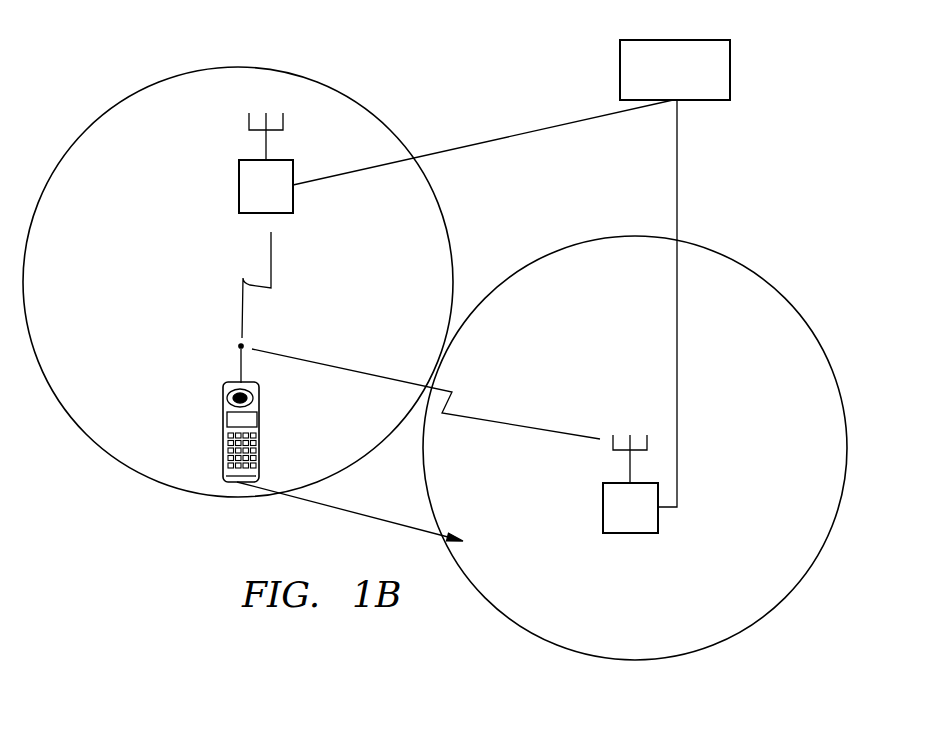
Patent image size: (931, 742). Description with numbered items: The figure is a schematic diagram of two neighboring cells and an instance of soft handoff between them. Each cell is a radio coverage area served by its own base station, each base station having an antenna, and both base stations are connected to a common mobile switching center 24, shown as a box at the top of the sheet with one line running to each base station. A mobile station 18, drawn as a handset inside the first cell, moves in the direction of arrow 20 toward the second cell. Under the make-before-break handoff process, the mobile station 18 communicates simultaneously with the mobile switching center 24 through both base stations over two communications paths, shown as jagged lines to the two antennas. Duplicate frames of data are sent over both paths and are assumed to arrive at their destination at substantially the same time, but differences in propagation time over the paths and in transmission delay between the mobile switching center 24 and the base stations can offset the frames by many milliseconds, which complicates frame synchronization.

The mobile station 18 is at (223, 438).
The arrow 20 is at (340, 509).
The mobile switching center 24 is at (731, 68).